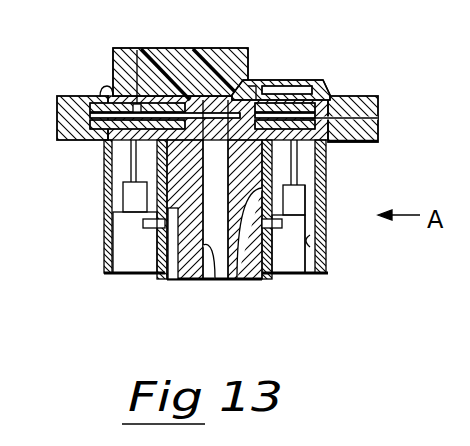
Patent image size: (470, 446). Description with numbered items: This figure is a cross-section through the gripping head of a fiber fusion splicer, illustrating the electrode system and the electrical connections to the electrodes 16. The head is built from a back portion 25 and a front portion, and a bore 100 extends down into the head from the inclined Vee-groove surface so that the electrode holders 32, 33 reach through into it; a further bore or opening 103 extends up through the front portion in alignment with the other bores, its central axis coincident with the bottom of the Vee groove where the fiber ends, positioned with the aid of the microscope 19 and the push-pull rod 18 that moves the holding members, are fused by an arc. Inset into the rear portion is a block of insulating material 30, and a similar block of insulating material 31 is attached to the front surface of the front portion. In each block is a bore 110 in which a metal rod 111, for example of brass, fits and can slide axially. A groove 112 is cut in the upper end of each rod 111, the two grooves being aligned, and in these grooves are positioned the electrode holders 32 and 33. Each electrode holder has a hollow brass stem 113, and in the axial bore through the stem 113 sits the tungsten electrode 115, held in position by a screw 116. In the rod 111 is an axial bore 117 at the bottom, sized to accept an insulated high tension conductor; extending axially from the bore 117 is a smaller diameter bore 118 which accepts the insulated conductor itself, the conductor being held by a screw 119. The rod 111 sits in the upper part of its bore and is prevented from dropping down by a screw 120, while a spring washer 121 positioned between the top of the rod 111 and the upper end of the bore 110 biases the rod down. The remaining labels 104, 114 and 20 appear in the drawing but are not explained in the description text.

The bore 100 is at (143, 50).
The valve body block 104 is at (172, 52).
The microscope 19 is at (168, 52).
The tungsten electrode 115 is at (238, 78).
The screw 116 is at (133, 55).
The spring washer 121 is at (305, 92).
The electrodes 16 is at (248, 88).
The groove 112 is at (310, 95).
The electrode holder 33 is at (355, 96).
The electrode holder 32 is at (88, 96).
The back portion 25 is at (107, 86).
The hollow brass stem 113 is at (203, 85).
The lower edge 114 is at (360, 141).
The smaller diameter bore 118 is at (320, 152).
The screw 119 is at (325, 182).
The metal rod 111 is at (315, 200).
The block of insulating material 31 is at (312, 241).
The bore 110 is at (325, 255).
The axial bore 117 is at (300, 275).
The screw 120 is at (257, 279).
The block of insulating material 30 is at (110, 216).
The push-pull rod 18 is at (237, 280).
The bore 103 is at (208, 280).
The passage 20 is at (215, 280).